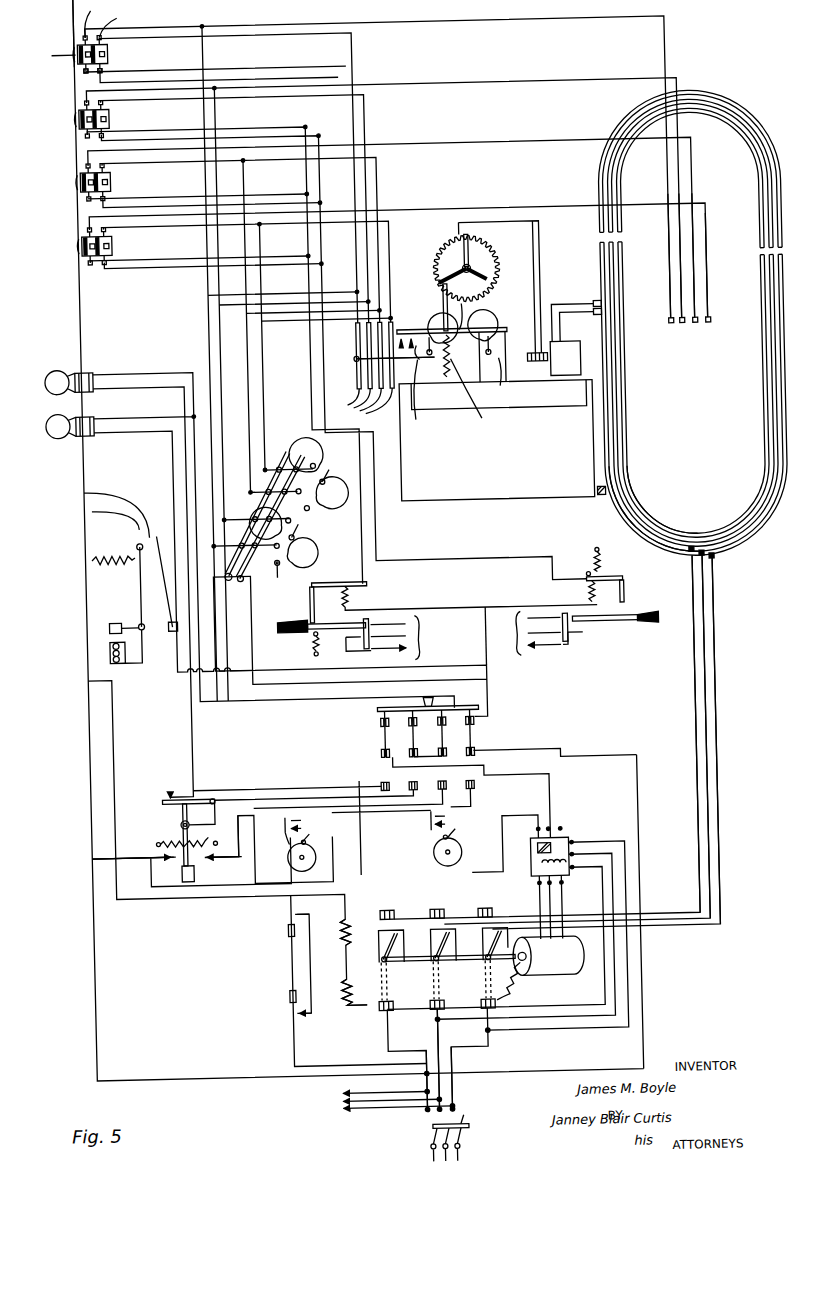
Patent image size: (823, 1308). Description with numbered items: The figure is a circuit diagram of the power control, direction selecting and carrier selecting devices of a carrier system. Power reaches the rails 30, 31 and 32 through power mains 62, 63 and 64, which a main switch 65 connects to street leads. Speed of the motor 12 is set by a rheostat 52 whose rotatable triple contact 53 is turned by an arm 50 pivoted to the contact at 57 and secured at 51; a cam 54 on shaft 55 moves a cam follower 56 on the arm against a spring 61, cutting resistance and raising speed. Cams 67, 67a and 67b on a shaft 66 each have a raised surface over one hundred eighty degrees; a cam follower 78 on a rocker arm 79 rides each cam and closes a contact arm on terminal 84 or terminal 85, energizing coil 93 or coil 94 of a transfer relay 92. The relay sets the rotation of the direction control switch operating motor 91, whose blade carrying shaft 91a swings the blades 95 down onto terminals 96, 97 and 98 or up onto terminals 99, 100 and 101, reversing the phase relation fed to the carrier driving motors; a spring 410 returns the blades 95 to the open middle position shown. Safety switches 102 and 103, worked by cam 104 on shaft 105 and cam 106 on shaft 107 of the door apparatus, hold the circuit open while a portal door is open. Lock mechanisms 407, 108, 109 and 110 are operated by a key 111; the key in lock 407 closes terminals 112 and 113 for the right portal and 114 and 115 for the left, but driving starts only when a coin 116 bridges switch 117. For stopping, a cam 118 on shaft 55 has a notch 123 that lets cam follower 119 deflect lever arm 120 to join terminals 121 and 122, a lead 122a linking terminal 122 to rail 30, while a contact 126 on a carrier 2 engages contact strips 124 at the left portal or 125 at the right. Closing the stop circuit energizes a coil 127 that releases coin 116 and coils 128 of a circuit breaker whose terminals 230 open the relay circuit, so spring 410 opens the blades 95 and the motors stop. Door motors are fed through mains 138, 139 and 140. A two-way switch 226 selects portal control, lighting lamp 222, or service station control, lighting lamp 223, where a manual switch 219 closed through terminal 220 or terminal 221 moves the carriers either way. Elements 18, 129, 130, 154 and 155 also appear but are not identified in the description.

The carrier 2 is at (496, 501).
The motor 12 is at (574, 356).
The contact 18 is at (600, 500).
The rail 30 is at (608, 270).
The rail 31 is at (640, 528).
The rail 32 is at (642, 514).
The arm 50 is at (470, 330).
The pivot 51 is at (500, 333).
The rheostat 52 is at (500, 266).
The triple contact 53 is at (462, 256).
The cam 54 is at (505, 377).
The shaft 55 is at (434, 356).
The cam follower 56 is at (479, 343).
The pivotal connection 57 is at (446, 270).
The spring 61 is at (475, 397).
The power main 62 is at (690, 600).
The power main 63 is at (706, 610).
The power main 64 is at (716, 578).
The main switch 65 is at (460, 1127).
The shaft 66 is at (278, 576).
The cam 67 is at (308, 538).
The cam 67a is at (292, 562).
The cam 67b is at (322, 461).
The cam follower 78 is at (316, 456).
The rocker arm 79 is at (296, 450).
The terminal 84 is at (230, 580).
The terminal 85 is at (241, 579).
The direction control switch operating motor 91 is at (564, 976).
The switch blade carrying shaft 91a is at (476, 984).
The transfer relay 92 is at (524, 872).
The coil 93 is at (531, 850).
The coil 94 is at (535, 866).
The blades 95 is at (390, 944).
The terminal 96 is at (370, 1008).
The terminal 97 is at (421, 1004).
The terminal 98 is at (488, 1006).
The terminal 99 is at (382, 910).
The terminal 100 is at (432, 910).
The terminal 101 is at (478, 910).
The automatic switch 102 is at (424, 820).
The automatic switch 103 is at (280, 830).
The cam 104 is at (438, 866).
The shaft 105 is at (440, 855).
The cam 106 is at (284, 858).
The shaft 107 is at (88, 52).
The lock mechanism 108 is at (87, 111).
The lock mechanism 109 is at (87, 174).
The lock mechanism 110 is at (87, 239).
The key 111 is at (74, 36).
The terminal 112 is at (97, 20).
The terminal 113 is at (96, 64).
The terminal 114 is at (123, 22).
The terminal 115 is at (110, 65).
The coin 116 is at (130, 520).
The switch 117 is at (120, 548).
The cam 118 is at (418, 396).
The cam follower 119 is at (416, 355).
The lever arm 120 is at (452, 323).
The terminal 121 is at (407, 338).
The terminal 122 is at (417, 338).
The lead 122a is at (575, 410).
The notch 123 is at (453, 380).
The contact strips 124 is at (364, 368).
The contact strips 125 is at (702, 392).
The contact 126 is at (360, 357).
The coil 127 is at (108, 640).
The coils 128 is at (330, 990).
The relay 129 is at (354, 604).
The relay 130 is at (586, 596).
The main 138 is at (372, 1110).
The main 139 is at (404, 1102).
The main 140 is at (380, 1088).
The pawl 154 is at (304, 842).
The pawl 155 is at (296, 818).
The manually operated switch 219 is at (172, 862).
The terminal 220 is at (150, 845).
The terminal 221 is at (200, 860).
The lamp 222 is at (60, 363).
The lamp 223 is at (62, 431).
The two-way switch 226 is at (480, 710).
The terminals 230 is at (280, 926).
The lock mechanism 407 is at (46, 55).
The spring 410 is at (500, 984).